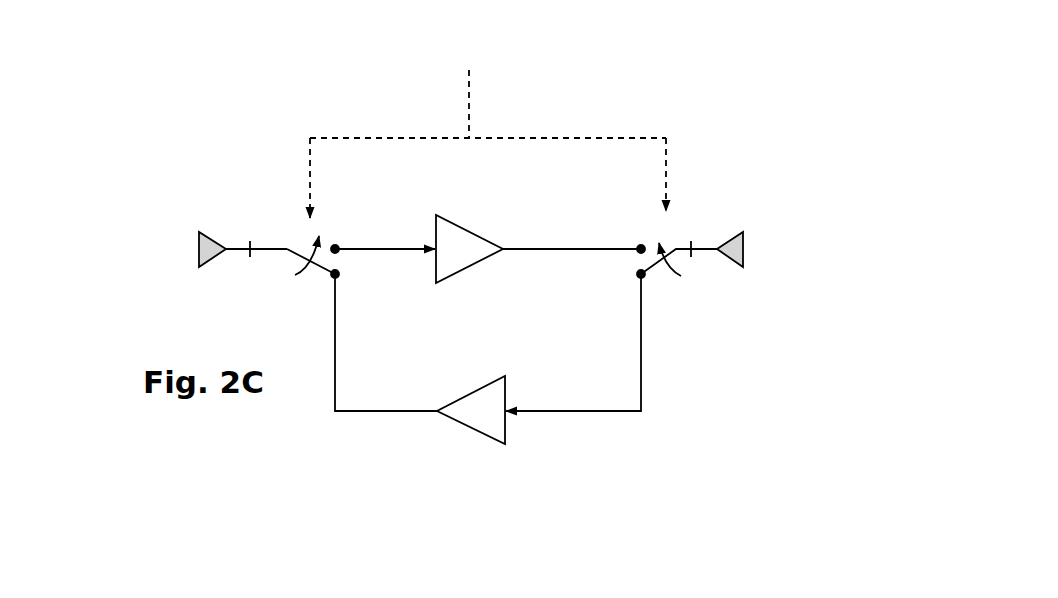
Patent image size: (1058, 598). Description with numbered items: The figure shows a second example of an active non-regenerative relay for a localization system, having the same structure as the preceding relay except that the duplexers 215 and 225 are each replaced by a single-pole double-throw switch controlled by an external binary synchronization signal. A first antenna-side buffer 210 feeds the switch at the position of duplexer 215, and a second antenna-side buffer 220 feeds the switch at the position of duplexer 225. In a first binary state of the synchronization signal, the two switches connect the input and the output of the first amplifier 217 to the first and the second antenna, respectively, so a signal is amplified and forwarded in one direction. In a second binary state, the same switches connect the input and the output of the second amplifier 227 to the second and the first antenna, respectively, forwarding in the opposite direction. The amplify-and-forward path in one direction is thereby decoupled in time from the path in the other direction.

The input buffer / driver 210 is at (197, 241).
The duplexer 215 is at (325, 237).
The first amplifier 217 is at (462, 221).
The output buffer / driver 220 is at (750, 244).
The duplexer 225 is at (670, 240).
The second amplifier 227 is at (510, 447).